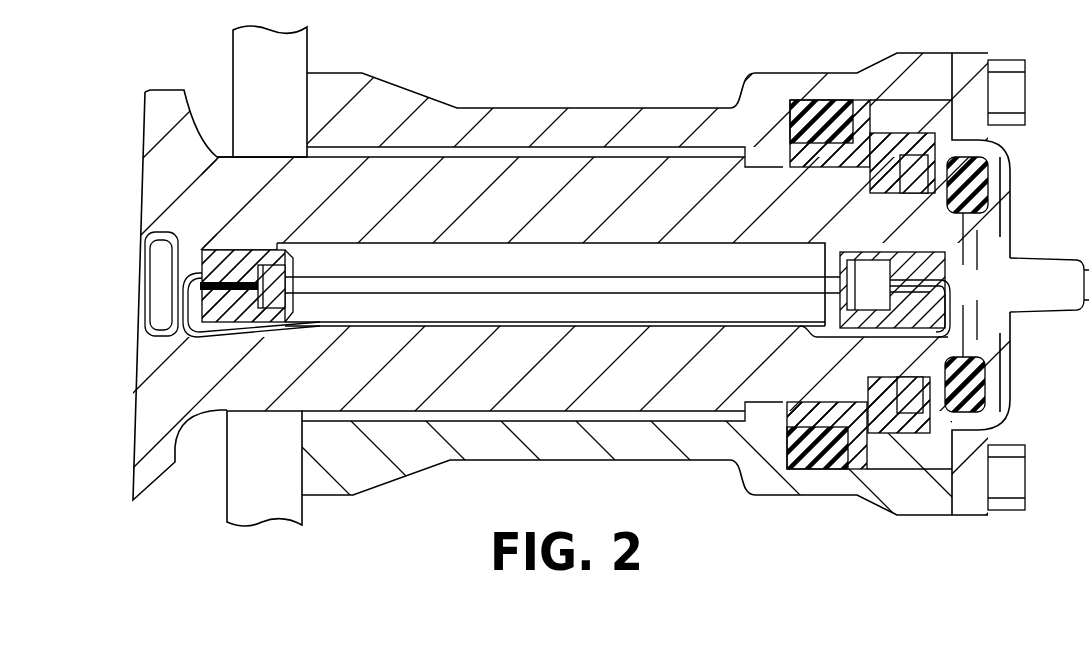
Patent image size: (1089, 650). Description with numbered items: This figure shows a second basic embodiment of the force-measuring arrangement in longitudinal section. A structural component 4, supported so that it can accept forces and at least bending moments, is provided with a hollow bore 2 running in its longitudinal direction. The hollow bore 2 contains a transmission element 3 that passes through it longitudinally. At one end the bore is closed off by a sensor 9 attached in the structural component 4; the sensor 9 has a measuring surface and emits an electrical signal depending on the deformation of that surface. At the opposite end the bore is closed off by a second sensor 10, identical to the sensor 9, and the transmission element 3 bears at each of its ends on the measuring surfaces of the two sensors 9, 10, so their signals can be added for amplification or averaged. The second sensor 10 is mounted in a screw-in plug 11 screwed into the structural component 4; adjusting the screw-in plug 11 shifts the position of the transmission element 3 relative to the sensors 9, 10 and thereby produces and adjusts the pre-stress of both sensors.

The hollow bore 2 is at (400, 253).
The transmission element 3 is at (487, 277).
The structural component 4 is at (627, 180).
The sensor 9 is at (955, 333).
The second sensor 10 is at (273, 295).
The screw-in plug 11 is at (217, 258).